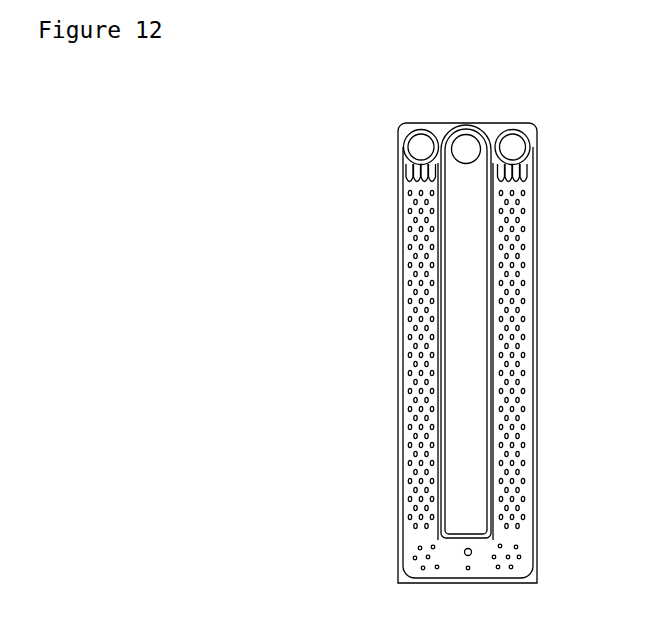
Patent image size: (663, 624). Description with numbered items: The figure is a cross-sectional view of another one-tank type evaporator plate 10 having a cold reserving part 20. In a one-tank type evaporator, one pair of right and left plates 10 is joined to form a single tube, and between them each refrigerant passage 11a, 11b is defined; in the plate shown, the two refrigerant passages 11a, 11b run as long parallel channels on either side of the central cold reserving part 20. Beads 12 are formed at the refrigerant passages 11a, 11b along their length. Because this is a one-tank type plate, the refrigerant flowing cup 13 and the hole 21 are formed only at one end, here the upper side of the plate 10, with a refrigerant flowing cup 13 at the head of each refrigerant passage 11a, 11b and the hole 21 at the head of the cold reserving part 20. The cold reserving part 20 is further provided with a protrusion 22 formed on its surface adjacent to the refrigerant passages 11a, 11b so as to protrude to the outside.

The evaporator plate 10 is at (536, 101).
The refrigerant passage 11a is at (398, 214).
The refrigerant passage 11b is at (540, 212).
The beads 12 is at (538, 270).
The refrigerant flowing cup 13 is at (403, 137).
The cold reserving part 20 is at (478, 302).
The hole 21 is at (465, 137).
The protrusion 22 is at (535, 372).